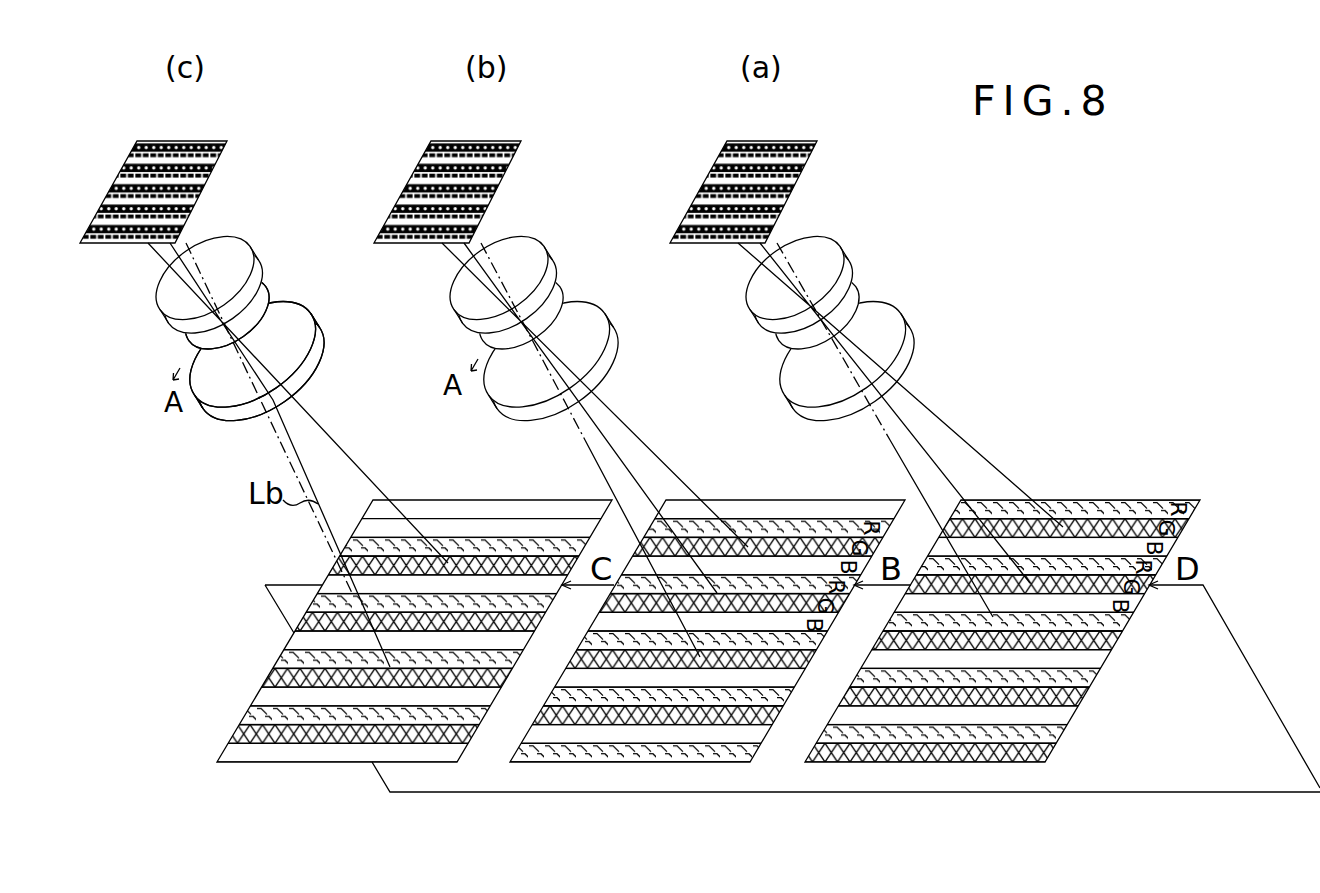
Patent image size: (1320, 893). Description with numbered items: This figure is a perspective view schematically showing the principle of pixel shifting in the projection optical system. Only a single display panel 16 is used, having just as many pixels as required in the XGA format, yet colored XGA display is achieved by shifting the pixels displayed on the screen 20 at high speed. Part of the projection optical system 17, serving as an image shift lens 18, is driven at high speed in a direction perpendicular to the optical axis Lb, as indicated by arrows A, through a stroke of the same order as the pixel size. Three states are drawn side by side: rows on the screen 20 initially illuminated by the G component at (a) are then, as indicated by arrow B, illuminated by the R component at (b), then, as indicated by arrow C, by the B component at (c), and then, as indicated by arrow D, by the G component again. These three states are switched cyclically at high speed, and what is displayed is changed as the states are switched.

The display panel 16 is at (113, 180).
The projection optical system 17 is at (247, 213).
The image shift lens 18 is at (180, 344).
The screen 20 is at (262, 690).